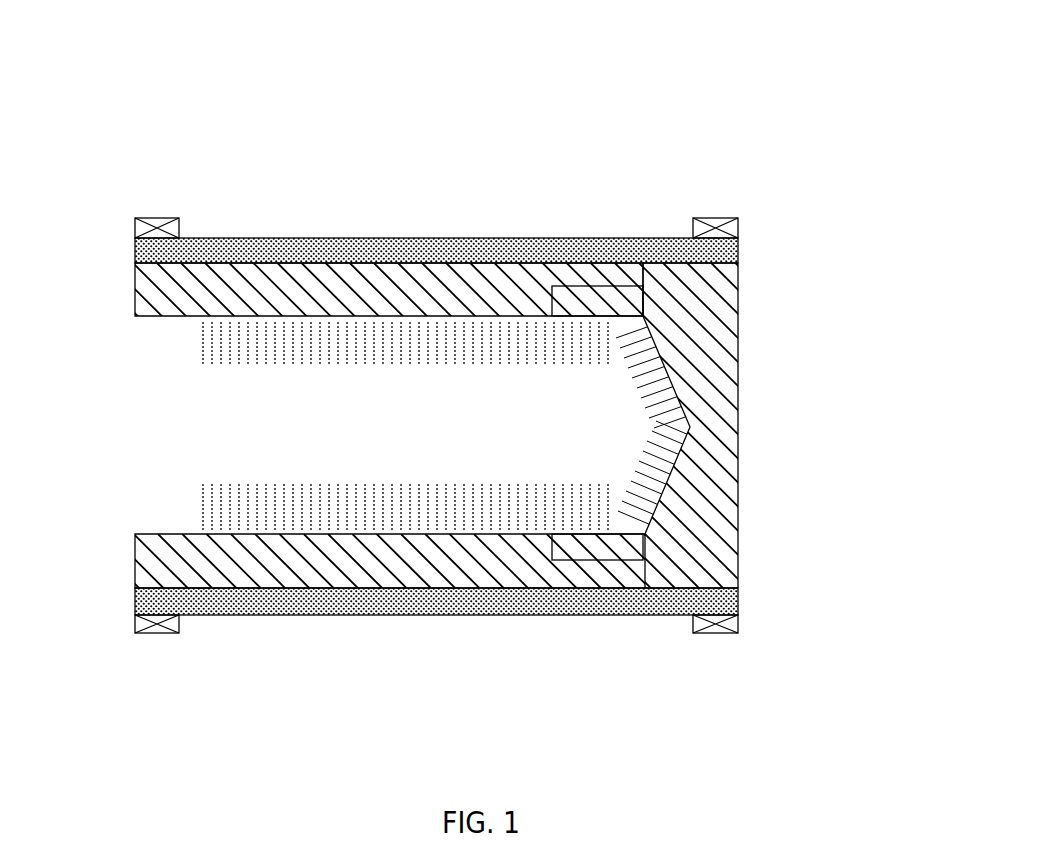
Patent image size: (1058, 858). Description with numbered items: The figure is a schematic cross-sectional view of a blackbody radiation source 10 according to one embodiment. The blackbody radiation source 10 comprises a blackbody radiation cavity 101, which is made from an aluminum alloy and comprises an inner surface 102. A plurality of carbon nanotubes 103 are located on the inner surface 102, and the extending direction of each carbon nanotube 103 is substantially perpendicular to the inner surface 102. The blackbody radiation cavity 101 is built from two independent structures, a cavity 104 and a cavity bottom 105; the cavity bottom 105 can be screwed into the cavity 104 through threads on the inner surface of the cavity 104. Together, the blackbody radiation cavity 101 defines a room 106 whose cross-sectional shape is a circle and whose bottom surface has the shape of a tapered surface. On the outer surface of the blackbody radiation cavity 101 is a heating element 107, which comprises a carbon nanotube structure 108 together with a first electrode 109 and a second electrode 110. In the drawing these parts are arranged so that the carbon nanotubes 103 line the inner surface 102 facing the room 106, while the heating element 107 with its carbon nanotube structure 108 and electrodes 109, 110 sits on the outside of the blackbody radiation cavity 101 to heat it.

The blackbody radiation source 10 is at (422, 66).
The blackbody radiation cavity 101 is at (880, 540).
The inner surface 102 is at (158, 530).
The carbon nanotubes 103 is at (203, 330).
The cavity 104 is at (563, 615).
The cavity bottom 105 is at (693, 548).
The room 106 is at (343, 442).
The heating element 107 is at (858, 185).
The carbon nanotube structure 108 is at (740, 252).
The first electrode 109 is at (737, 228).
The second electrode 110 is at (156, 218).